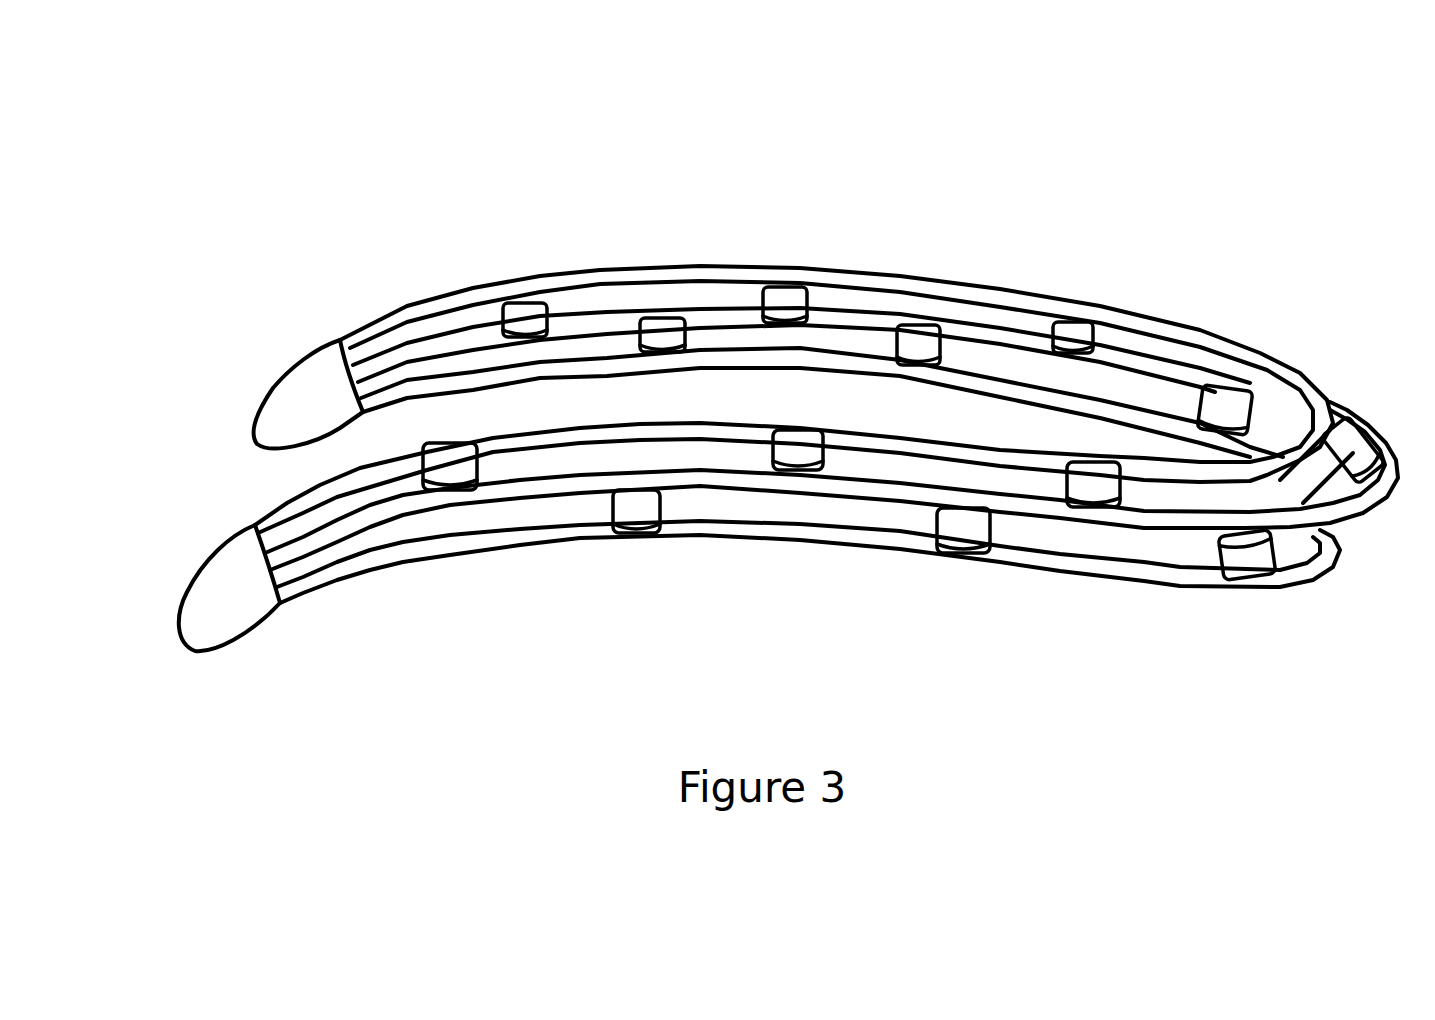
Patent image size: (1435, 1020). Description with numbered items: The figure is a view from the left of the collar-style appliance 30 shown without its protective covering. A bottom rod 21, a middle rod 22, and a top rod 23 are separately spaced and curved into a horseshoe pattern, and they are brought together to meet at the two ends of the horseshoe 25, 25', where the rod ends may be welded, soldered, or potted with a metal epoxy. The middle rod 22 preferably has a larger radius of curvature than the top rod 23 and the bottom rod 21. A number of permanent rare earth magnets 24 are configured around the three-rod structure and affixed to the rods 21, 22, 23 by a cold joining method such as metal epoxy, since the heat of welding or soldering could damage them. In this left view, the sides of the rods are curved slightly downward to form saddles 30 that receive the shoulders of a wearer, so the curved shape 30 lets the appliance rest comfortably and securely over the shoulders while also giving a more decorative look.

The bottom rod 21 is at (808, 475).
The middle rod 22 is at (834, 413).
The top rod 23 is at (831, 382).
The magnets 24 is at (1092, 470).
The end of the horseshoe configuration 25 is at (281, 394).
The end of the horseshoe configuration 25' is at (200, 588).
The appliance 30 is at (1195, 124).